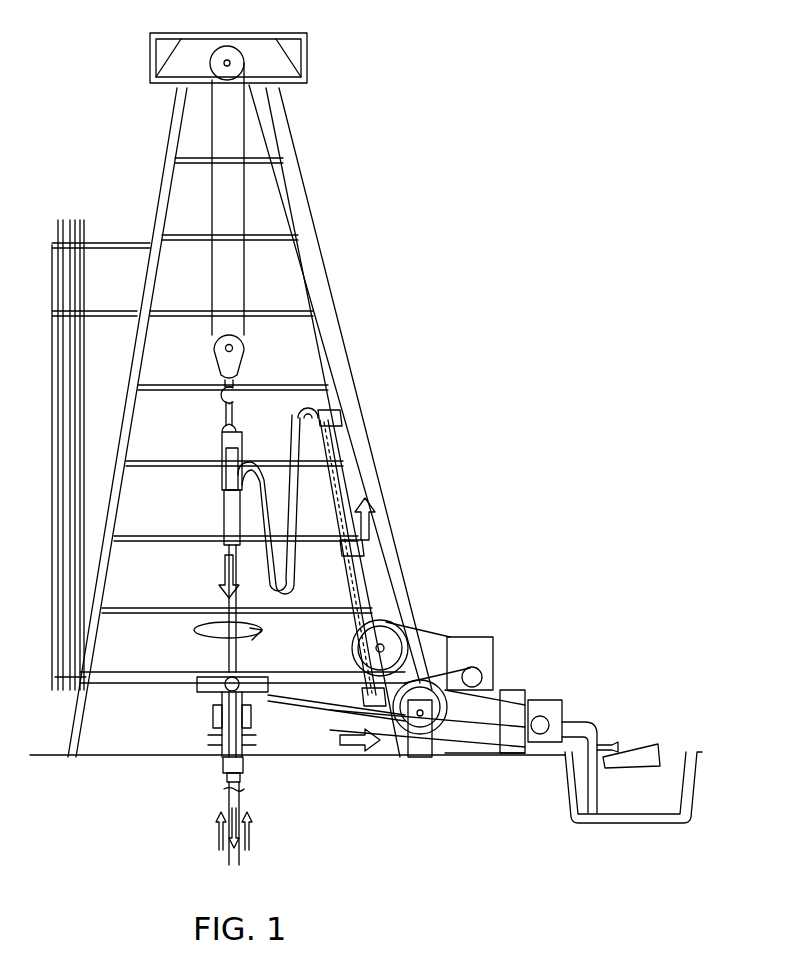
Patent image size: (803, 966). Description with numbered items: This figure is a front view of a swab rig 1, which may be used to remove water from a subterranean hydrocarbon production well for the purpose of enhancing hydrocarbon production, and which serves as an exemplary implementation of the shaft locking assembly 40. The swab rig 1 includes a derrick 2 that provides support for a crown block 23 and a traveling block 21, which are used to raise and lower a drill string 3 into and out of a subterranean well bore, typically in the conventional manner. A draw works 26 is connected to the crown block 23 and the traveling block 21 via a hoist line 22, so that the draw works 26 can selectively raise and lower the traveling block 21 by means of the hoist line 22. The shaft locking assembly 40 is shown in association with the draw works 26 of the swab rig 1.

The swab rig 1 is at (404, 93).
The derrick 2 is at (155, 172).
The drill string 3 is at (226, 780).
The traveling block 21 is at (214, 350).
The hoist line 22 is at (250, 193).
The crown block 23 is at (228, 45).
The draw works 26 is at (546, 627).
The shaft locking assembly 40 is at (420, 660).